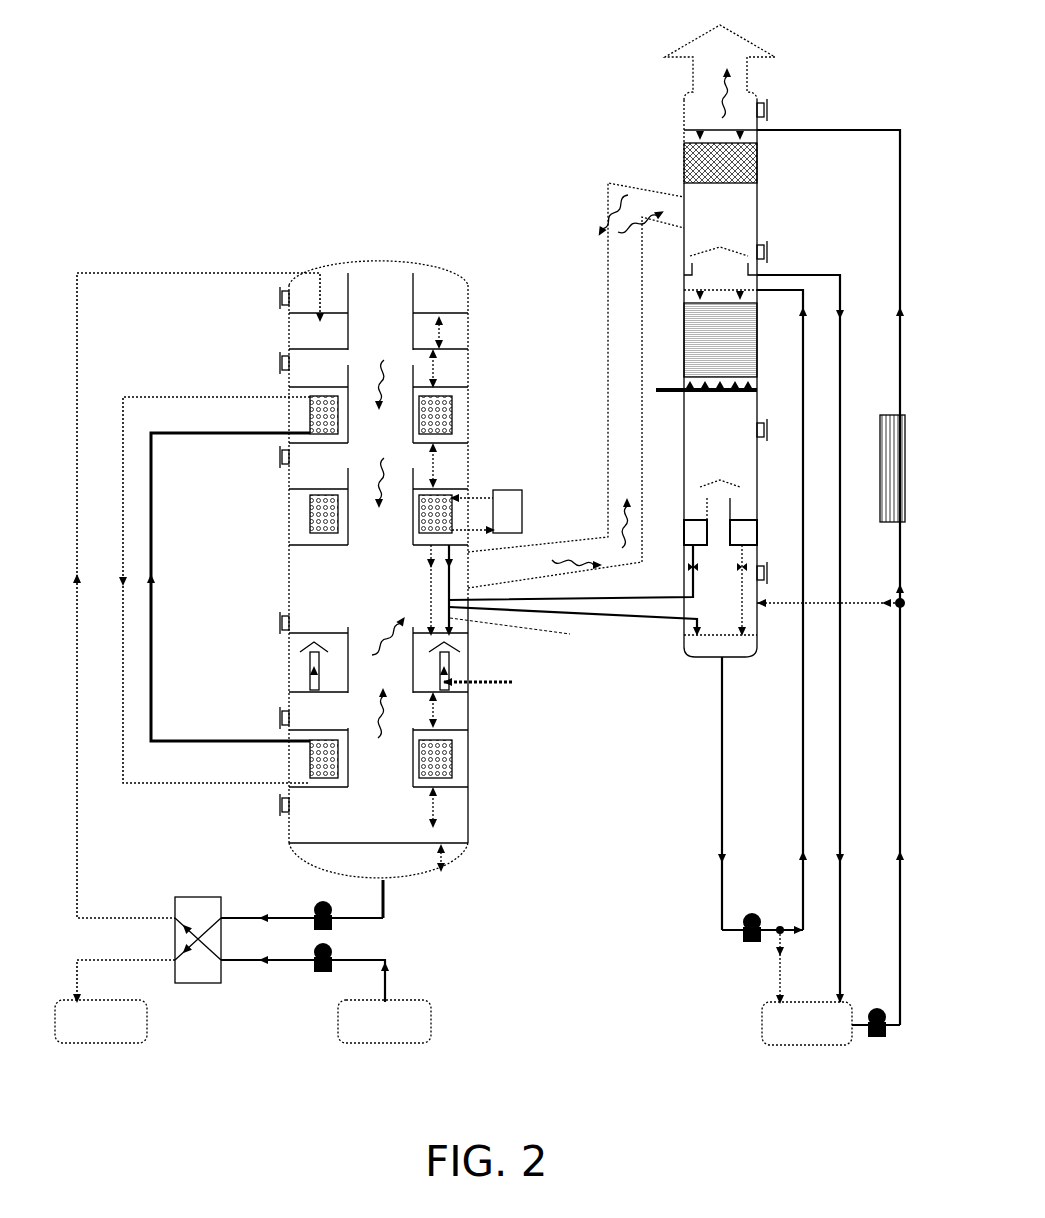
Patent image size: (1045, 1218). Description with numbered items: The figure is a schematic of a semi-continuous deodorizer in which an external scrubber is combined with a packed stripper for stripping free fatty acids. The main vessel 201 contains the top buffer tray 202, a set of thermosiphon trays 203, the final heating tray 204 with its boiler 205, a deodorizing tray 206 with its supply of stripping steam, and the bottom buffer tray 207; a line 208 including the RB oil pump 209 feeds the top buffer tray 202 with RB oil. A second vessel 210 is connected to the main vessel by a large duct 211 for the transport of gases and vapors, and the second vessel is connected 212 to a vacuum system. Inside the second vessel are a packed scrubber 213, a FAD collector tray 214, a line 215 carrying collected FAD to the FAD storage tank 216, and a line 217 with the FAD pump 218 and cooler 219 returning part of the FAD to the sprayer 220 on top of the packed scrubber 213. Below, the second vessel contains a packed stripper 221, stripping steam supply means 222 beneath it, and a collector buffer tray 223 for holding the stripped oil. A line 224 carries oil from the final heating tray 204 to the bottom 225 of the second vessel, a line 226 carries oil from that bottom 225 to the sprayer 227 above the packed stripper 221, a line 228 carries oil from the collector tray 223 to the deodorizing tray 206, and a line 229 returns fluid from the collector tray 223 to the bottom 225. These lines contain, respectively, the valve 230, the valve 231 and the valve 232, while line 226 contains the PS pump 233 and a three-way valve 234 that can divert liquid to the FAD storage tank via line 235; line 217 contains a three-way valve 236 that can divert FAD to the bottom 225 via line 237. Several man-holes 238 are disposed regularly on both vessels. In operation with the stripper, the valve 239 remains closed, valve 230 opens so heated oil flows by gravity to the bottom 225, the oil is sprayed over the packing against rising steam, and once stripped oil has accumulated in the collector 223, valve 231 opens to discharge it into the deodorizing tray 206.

The main vessel 201 is at (380, 260).
The top buffer tray 202 is at (452, 320).
The thermosiphon trays 203 is at (455, 405).
The final heating tray 204 is at (305, 508).
The boiler 205 is at (510, 500).
The deodorizing tray 206 is at (468, 688).
The bottom buffer tray 207 is at (458, 856).
The line 208 is at (84, 822).
The RB oil pump 209 is at (318, 975).
The second vessel 210 is at (684, 105).
The large duct 211 is at (620, 490).
The vacuum connection 212 is at (738, 80).
The packed scrubber 213 is at (700, 165).
The FAD collector tray 214 is at (692, 262).
The line 215 is at (832, 272).
The FAD storage tank 216 is at (755, 1030).
The line 217 is at (896, 848).
The FAD pump 218 is at (880, 1040).
The cooler 219 is at (886, 413).
The sprayer 220 is at (690, 130).
The packed stripper 221 is at (700, 330).
The stripping steam supply means 222 is at (672, 388).
The collector buffer tray 223 is at (745, 525).
The line 224 is at (620, 618).
The bottom of the second vessel 225 is at (703, 660).
The line 226 is at (718, 808).
The sprayer 227 is at (700, 290).
The line 228 is at (612, 594).
The line 229 is at (752, 605).
The valve 230 is at (452, 562).
The valve 231 is at (688, 563).
The valve 232 is at (750, 545).
The PS pump 233 is at (745, 935).
The three-way valve 234 is at (775, 935).
The line 235 is at (775, 975).
The three-way valve 236 is at (896, 595).
The line 237 is at (856, 610).
The man-holes 238 is at (281, 298).
The valve 239 is at (428, 562).